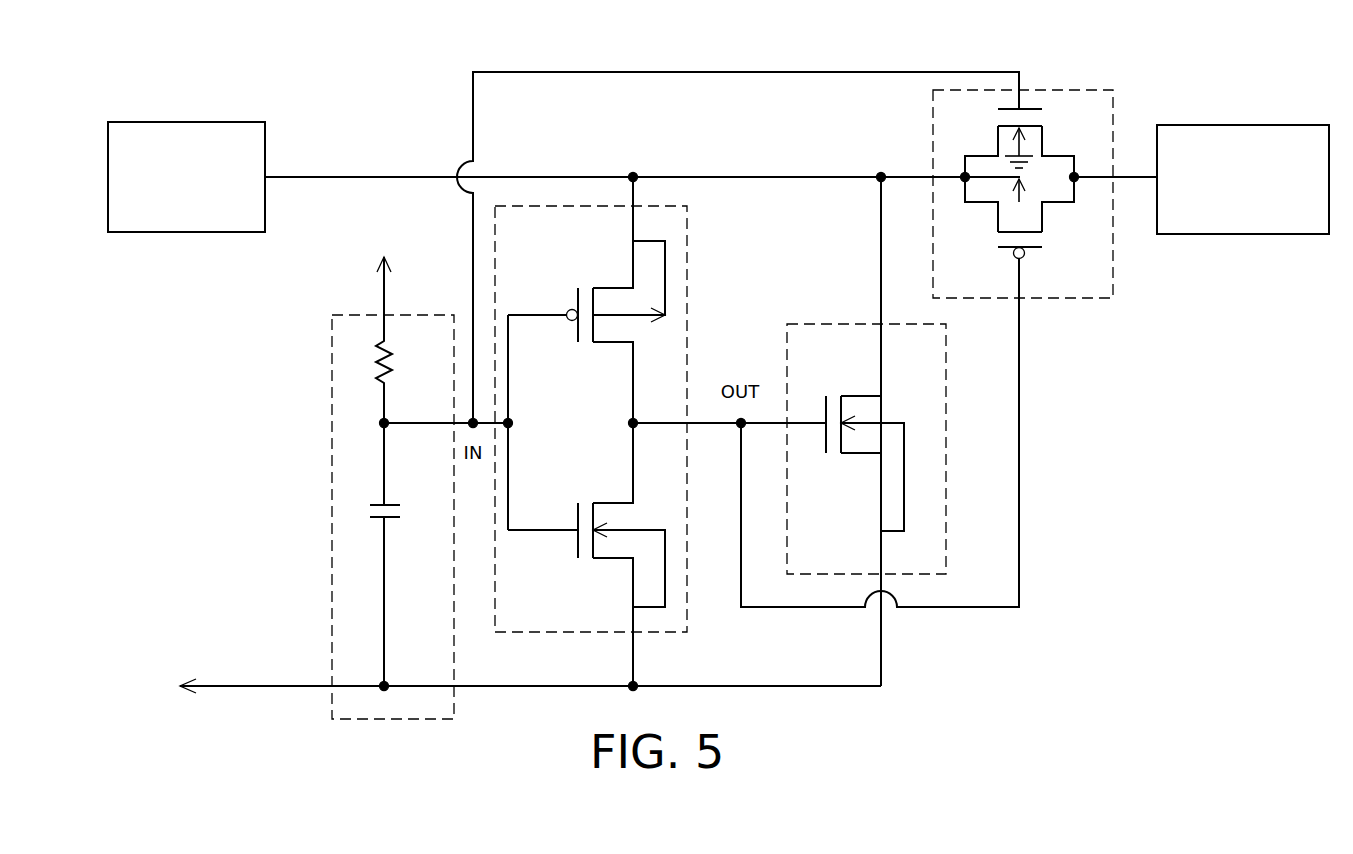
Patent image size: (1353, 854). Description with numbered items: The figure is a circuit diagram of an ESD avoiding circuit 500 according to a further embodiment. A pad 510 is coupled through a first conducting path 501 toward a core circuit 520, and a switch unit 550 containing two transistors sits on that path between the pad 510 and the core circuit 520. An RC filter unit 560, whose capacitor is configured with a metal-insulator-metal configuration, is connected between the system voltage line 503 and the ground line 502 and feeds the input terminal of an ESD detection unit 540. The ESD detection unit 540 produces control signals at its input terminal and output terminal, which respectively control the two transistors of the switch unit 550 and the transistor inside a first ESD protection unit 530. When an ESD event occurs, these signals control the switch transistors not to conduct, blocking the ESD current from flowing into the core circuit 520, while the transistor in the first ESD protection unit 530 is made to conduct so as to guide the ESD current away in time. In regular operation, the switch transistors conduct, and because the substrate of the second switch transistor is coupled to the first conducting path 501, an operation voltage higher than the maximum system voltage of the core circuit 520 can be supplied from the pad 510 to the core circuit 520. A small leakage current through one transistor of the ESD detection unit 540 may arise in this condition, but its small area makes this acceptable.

The ESD avoiding circuit 500 is at (1194, 692).
The first conducting path 501 is at (350, 177).
The ground line GND 502 is at (255, 686).
The power line VDD 503 is at (384, 297).
The pad 510 is at (160, 122).
The core circuit 520 is at (1243, 125).
The first ESD protection unit 530 is at (947, 418).
The ESD detection unit 540 is at (687, 233).
The switch unit 550 is at (1113, 114).
The RC filter unit 560 is at (332, 447).